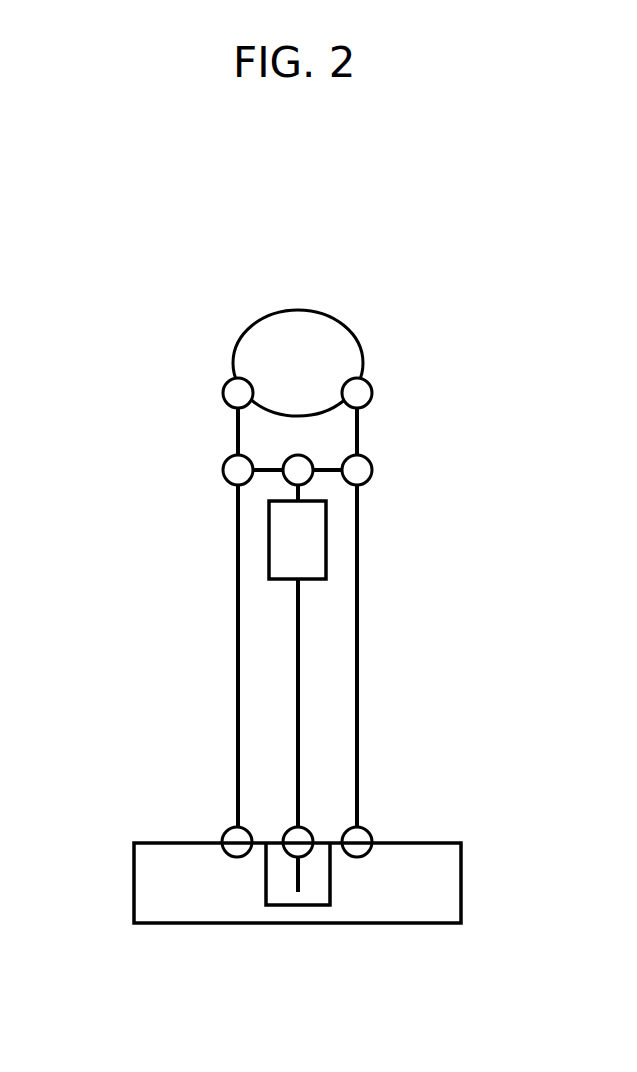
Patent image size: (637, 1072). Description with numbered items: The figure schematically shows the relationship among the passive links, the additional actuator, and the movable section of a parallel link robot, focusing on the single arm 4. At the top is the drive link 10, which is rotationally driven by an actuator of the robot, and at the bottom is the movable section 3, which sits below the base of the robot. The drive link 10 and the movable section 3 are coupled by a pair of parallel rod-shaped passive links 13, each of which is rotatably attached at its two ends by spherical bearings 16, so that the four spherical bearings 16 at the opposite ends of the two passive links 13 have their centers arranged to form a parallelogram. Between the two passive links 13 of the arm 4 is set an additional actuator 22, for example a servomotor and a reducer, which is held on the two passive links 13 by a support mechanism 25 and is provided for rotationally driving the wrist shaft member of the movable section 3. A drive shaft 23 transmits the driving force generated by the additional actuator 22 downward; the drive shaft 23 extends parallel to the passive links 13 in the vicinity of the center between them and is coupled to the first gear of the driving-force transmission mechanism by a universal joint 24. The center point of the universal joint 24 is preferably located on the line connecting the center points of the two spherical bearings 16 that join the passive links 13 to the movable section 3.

The movable section 3 is at (237, 935).
The arm 4 is at (124, 496).
The drive link 10 is at (297, 308).
The passive links 13 is at (237, 620).
The spherical bearings 16 is at (223, 393).
The additional actuator 22 is at (327, 533).
The drive shaft 23 is at (300, 689).
The universal joint 24 is at (288, 827).
The support mechanism 25 is at (330, 453).